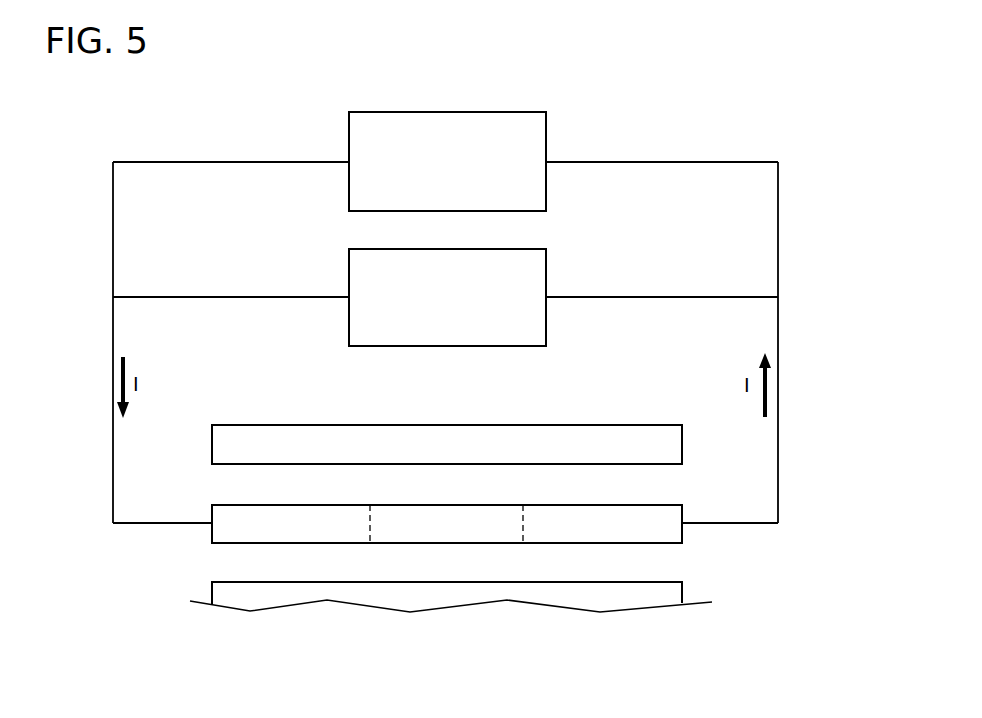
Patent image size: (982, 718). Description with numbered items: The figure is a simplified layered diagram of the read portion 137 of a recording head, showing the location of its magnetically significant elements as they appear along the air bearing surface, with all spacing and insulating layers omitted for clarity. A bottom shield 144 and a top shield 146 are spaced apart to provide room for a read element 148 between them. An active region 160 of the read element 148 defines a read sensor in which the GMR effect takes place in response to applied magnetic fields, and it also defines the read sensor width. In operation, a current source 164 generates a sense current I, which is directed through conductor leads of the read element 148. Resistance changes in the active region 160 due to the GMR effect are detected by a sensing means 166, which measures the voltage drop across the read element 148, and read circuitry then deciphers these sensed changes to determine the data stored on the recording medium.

The sensing means 166 is at (532, 127).
The current source 164 is at (533, 265).
The read portion 137 is at (576, 400).
The top shield 146 is at (463, 455).
The active region 160 is at (466, 533).
The read element 148 is at (665, 533).
The bottom shield 144 is at (217, 587).